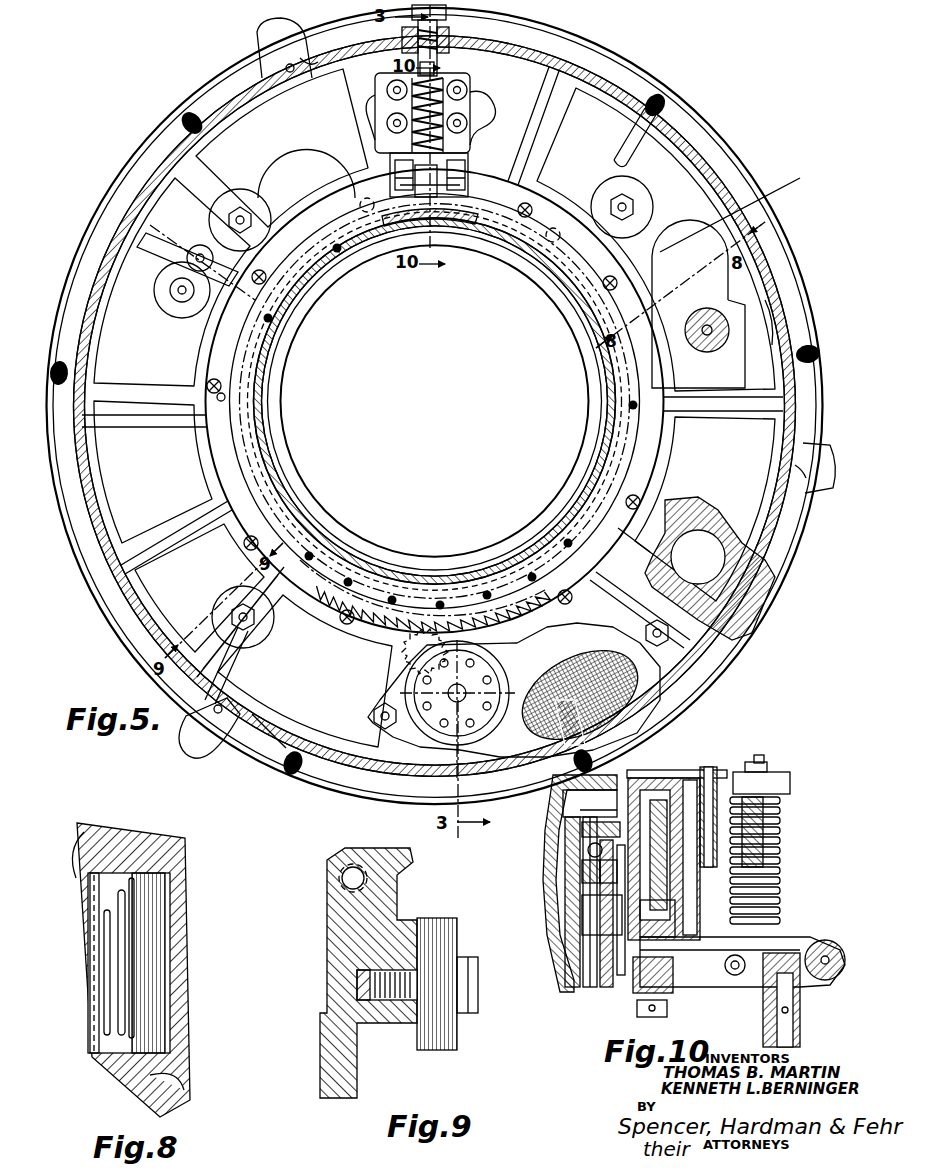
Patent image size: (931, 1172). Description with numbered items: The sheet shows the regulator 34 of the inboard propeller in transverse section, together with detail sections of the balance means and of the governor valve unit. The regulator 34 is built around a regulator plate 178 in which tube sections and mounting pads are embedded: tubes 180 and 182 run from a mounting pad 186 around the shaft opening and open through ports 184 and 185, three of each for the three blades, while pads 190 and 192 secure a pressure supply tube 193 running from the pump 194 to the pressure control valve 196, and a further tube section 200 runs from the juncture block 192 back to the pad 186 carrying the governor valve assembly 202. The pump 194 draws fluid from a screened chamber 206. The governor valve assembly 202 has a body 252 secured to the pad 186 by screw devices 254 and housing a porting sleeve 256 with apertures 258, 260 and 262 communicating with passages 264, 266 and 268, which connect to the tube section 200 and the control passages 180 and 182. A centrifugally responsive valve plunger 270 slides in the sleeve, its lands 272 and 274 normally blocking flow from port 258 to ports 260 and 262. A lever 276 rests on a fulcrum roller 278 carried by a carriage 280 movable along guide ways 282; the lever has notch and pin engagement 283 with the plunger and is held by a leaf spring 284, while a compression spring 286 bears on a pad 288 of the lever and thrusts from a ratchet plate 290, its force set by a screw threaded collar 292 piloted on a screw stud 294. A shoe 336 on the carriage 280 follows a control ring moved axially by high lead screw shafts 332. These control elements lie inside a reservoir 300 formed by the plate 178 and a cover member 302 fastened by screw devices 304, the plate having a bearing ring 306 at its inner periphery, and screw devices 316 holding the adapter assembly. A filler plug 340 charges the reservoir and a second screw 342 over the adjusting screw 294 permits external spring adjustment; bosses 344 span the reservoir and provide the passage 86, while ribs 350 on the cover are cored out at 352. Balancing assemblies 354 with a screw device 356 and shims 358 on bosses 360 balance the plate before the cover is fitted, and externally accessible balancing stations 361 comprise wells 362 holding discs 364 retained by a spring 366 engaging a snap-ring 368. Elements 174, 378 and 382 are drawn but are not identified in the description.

In FIG. 5, the regulator 34 is at (140, 128).
In FIG. 5, the passage 86 is at (705, 341).
In FIG. 5, the control ring assembly 174 is at (673, 50).
In FIG. 8, the regulator plate 178 is at (182, 858).
In FIG. 9, the regulator plate 178 is at (336, 922).
In FIG. 10, the regulator plate 178 is at (565, 870).
In FIG. 5, the tube section 180 is at (588, 490).
In FIG. 10, the tube section 180 is at (590, 990).
In FIG. 5, the tube section 182 is at (604, 462).
In FIG. 10, the tube section 182 is at (572, 985).
In FIG. 5, the ports 184 is at (339, 256).
In FIG. 5, the ports 185 is at (523, 219).
In FIG. 5, the mounting pad 186 is at (484, 105).
In FIG. 10, the mounting pad 186 is at (580, 800).
In FIG. 5, the pad 190 is at (400, 668).
In FIG. 5, the mounting pad and juncture block 192 is at (190, 270).
In FIG. 9, the mounting pad and juncture block 192 is at (341, 879).
In FIG. 5, the pressure supply tube 193 is at (203, 472).
In FIG. 5, the pump unit 194 is at (490, 670).
In FIG. 5, the pressure control valve 196 is at (170, 287).
In FIG. 5, the tube section 200 is at (243, 140).
In FIG. 10, the tube section 200 is at (545, 870).
In FIG. 5, the governor valve assembly 202 is at (472, 140).
In FIG. 10, the governor valve assembly 202 is at (834, 811).
In FIG. 5, the screened chamber 206 is at (584, 660).
In FIG. 10, the body 252 is at (782, 893).
In FIG. 5, the screw devices 254 is at (380, 90).
In FIG. 10, the porting sleeve 256 is at (724, 965).
In FIG. 10, the port 258 is at (600, 870).
In FIG. 10, the port 260 is at (600, 900).
In FIG. 10, the port 262 is at (655, 768).
In FIG. 10, the passage 264 is at (588, 850).
In FIG. 10, the passage 266 is at (617, 900).
In FIG. 10, the passage 268 is at (585, 815).
In FIG. 10, the valve plunger 270 is at (712, 770).
In FIG. 10, the land 272 is at (605, 920).
In FIG. 10, the land 274 is at (690, 772).
In FIG. 10, the lever 276 is at (672, 985).
In FIG. 5, the fulcrum roller 278 is at (455, 176).
In FIG. 10, the fulcrum roller 278 is at (825, 982).
In FIG. 10, the carriage 280 is at (770, 995).
In FIG. 10, the guide ways 282 is at (668, 1012).
In FIG. 10, the notch and pin engagement 283 is at (607, 990).
In FIG. 10, the leaf spring 284 is at (690, 945).
In FIG. 10, the compression spring 286 is at (784, 913).
In FIG. 10, the pad 288 is at (800, 937).
In FIG. 10, the ratchet plate 290 is at (767, 766).
In FIG. 10, the screw threaded collar 292 is at (790, 785).
In FIG. 5, the screw stud 294 is at (468, 82).
In FIG. 10, the screw stud 294 is at (760, 756).
In FIG. 5, the reservoir 300 is at (740, 290).
In FIG. 5, the cover member 302 is at (776, 306).
In FIG. 5, the screw devices 304 is at (666, 115).
In FIG. 5, the bearing ring 306 is at (372, 560).
In FIG. 5, the screw devices 316 is at (330, 560).
In FIG. 5, the high lead screw shafts 332 is at (437, 600).
In FIG. 10, the shoe 336 is at (794, 1035).
In FIG. 5, the filler plug 340 is at (766, 592).
In FIG. 5, the plug or screw 342 is at (480, 18).
In FIG. 5, the bosses 344 is at (720, 346).
In FIG. 5, the ribs 350 is at (268, 32).
In FIG. 5, the cored passages 352 is at (306, 63).
In FIG. 5, the balancing assemblies 354 is at (264, 214).
In FIG. 9, the balancing assemblies 354 is at (410, 1073).
In FIG. 5, the screw device 356 is at (252, 636).
In FIG. 9, the screw device 356 is at (468, 1014).
In FIG. 9, the shims or weight members 358 is at (440, 916).
In FIG. 9, the bosses 360 is at (400, 940).
In FIG. 5, the balancing stations 361 is at (332, 172).
In FIG. 8, the balancing stations 361 is at (192, 1004).
In FIG. 8, the wells 362 is at (105, 870).
In FIG. 8, the shims or discs 364 is at (156, 905).
In FIG. 8, the spring 366 is at (126, 985).
In FIG. 8, the snap-ring 368 is at (88, 830).
In FIG. 5, the web 378 is at (266, 716).
In FIG. 5, the link 382 is at (273, 320).